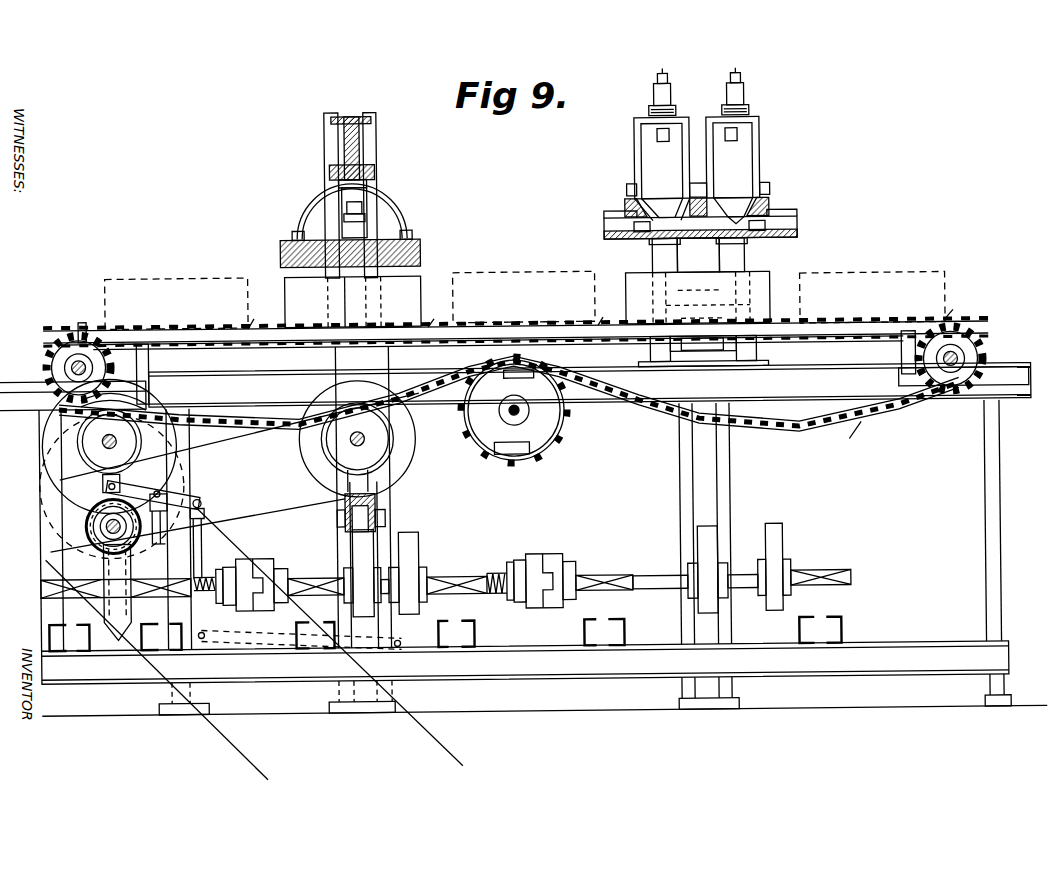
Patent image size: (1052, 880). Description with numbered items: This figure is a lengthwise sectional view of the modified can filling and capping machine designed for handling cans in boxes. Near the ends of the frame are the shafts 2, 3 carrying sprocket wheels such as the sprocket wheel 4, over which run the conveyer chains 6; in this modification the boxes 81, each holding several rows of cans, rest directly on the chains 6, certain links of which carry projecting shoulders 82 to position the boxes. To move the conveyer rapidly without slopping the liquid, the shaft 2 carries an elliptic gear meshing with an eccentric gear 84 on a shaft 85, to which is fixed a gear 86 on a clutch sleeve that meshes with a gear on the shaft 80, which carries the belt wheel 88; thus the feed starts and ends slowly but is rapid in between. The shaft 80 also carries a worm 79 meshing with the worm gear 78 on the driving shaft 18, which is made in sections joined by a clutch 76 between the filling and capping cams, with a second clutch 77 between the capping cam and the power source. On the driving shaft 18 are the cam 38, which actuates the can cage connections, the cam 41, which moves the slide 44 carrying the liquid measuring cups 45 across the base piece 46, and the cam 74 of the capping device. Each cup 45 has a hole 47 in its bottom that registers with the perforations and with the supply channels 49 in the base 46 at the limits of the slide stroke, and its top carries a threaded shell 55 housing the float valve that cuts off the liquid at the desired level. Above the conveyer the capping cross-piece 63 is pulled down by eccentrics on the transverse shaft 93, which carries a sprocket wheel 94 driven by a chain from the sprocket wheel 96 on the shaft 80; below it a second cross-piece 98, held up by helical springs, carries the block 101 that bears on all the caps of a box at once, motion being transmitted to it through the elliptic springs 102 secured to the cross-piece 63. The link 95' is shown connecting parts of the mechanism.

The shaft 2 is at (48, 361).
The shaft 3 is at (962, 360).
The sprocket wheel 4 is at (100, 360).
The sprocket chain 6 is at (830, 332).
The driving shaft 18 is at (569, 572).
The cam 38 is at (774, 542).
The cam 41 is at (702, 553).
The slide 44 is at (785, 190).
The liquid measuring cup 45 is at (733, 166).
The base piece 46 is at (632, 234).
The hole 47 is at (738, 222).
The hole or channel 49 is at (718, 232).
The threaded shell 55 is at (658, 94).
The cross-piece 63 is at (365, 150).
The cam 74 is at (360, 552).
The clutch 76 is at (532, 580).
The clutch 77 is at (241, 585).
The worm gear 78 is at (117, 592).
The worm 79 is at (106, 524).
The shaft 80 is at (104, 535).
The box 81 is at (525, 298).
The projecting shoulder 82 is at (612, 375).
The eccentric gear 84 is at (100, 482).
The shaft 85 is at (109, 446).
The gear 86 is at (152, 404).
The belt wheel 88 is at (44, 556).
The shaft 93 is at (366, 437).
The sprocket wheel 94 is at (385, 472).
The connecting link 95' is at (198, 515).
The sprocket wheel 96 is at (140, 540).
The second cross-piece 98 is at (337, 213).
The block 101 is at (350, 253).
The elliptic spring 102 is at (378, 206).